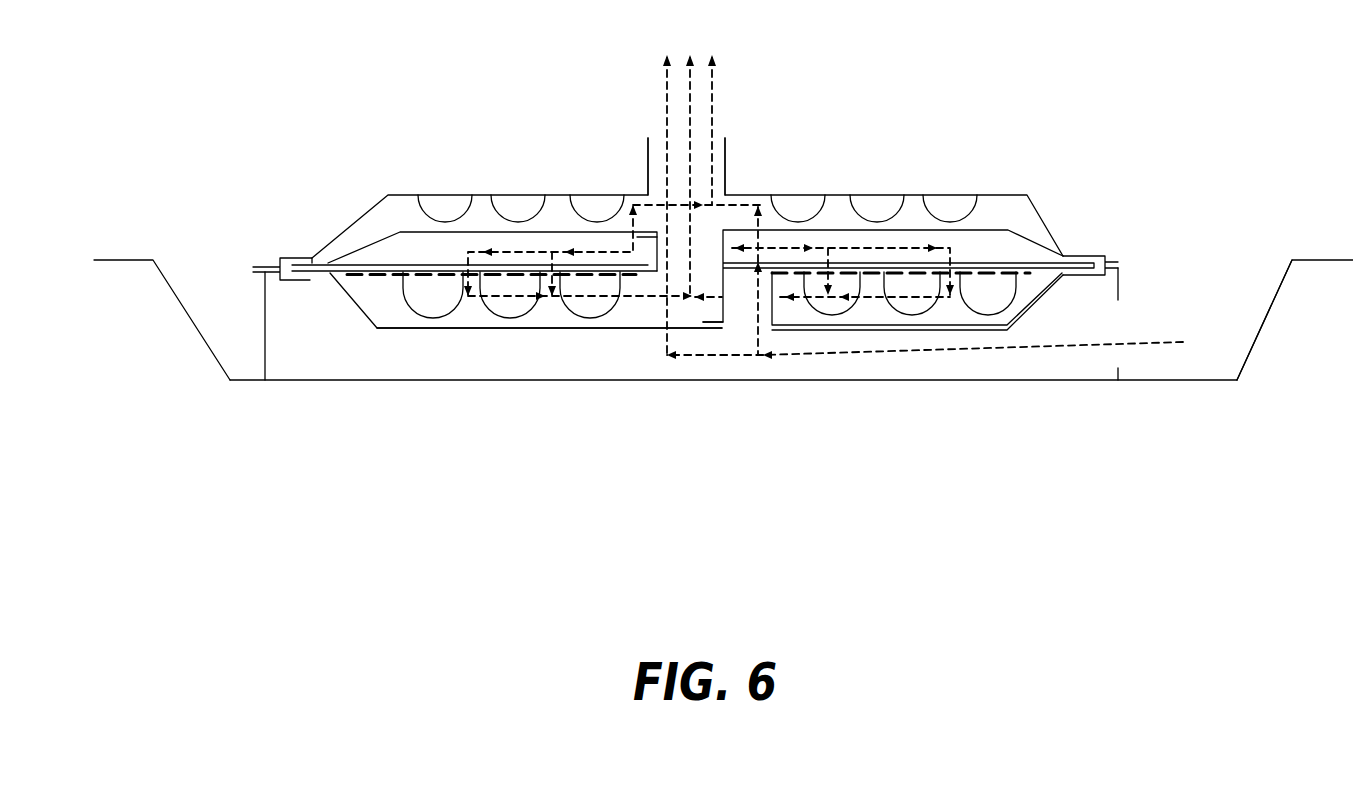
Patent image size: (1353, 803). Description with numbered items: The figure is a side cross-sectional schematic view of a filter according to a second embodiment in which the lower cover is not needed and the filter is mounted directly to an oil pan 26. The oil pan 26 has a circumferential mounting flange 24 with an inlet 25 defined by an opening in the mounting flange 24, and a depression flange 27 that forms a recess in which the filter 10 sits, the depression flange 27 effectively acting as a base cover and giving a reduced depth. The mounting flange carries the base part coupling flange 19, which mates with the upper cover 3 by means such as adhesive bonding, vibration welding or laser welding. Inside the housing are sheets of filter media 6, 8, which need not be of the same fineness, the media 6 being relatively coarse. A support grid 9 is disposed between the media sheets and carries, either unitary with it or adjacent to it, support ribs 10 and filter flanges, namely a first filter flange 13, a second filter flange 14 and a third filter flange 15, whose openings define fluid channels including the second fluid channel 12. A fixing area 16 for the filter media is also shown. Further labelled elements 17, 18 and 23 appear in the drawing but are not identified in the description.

The upper cover 3 is at (1043, 214).
The filter media 6 is at (397, 328).
The filter media 8 is at (405, 230).
The support grid 9 is at (373, 273).
The support ribs 10 is at (440, 312).
The second fluid channel 12 is at (710, 240).
The first filter flange 13 is at (787, 325).
The second filter flange 14 is at (727, 307).
The third filter flange 15 is at (652, 233).
The fixing area 16 is at (288, 258).
The upper cavity 17 is at (945, 203).
The outlet connector 18 is at (1122, 258).
The coupling flange 19 is at (1125, 268).
The base 23 is at (535, 362).
The circumferential mounting flange 24 is at (265, 337).
The inlet 25 is at (1112, 326).
The oil pan 26 is at (126, 260).
The depression flange 27 is at (1253, 340).